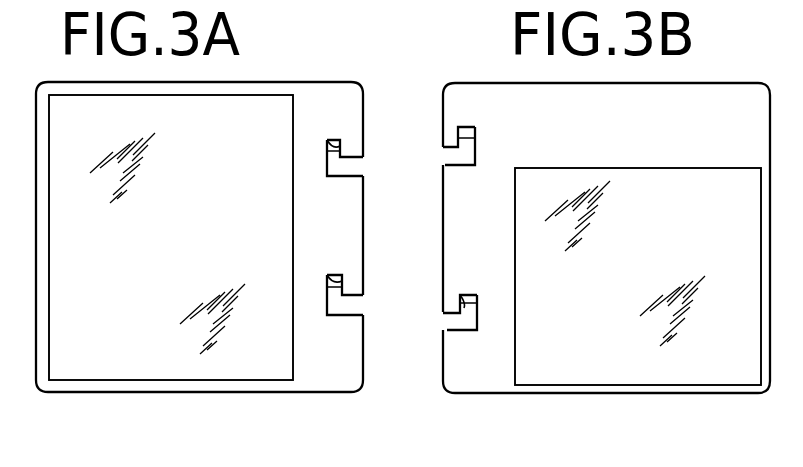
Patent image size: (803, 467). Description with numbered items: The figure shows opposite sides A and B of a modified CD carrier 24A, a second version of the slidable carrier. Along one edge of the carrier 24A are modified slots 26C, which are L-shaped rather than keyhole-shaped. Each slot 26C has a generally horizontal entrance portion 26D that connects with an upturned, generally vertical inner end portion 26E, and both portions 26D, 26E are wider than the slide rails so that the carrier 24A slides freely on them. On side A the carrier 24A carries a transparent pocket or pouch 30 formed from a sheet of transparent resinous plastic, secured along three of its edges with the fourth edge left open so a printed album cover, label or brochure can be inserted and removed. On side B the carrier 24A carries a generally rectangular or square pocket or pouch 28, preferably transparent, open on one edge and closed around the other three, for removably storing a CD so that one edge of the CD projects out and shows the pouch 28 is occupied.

In FIG. 3A, the modified CD carrier 24A is at (226, 82).
In FIG. 3B, the modified CD carrier 24A is at (571, 396).
In FIG. 3A, the modified slot 26C is at (348, 166).
In FIG. 3B, the modified slot 26C is at (443, 148).
In FIG. 3A, the entrance portion 26D is at (334, 171).
In FIG. 3B, the entrance portion 26D is at (463, 164).
In FIG. 3A, the upturned inner end portion 26E is at (329, 142).
In FIG. 3B, the upturned inner end portion 26E is at (475, 135).
In FIG. 3B, the pocket or pouch 28 is at (624, 363).
In FIG. 3A, the transparent pocket or pouch 30 is at (193, 360).